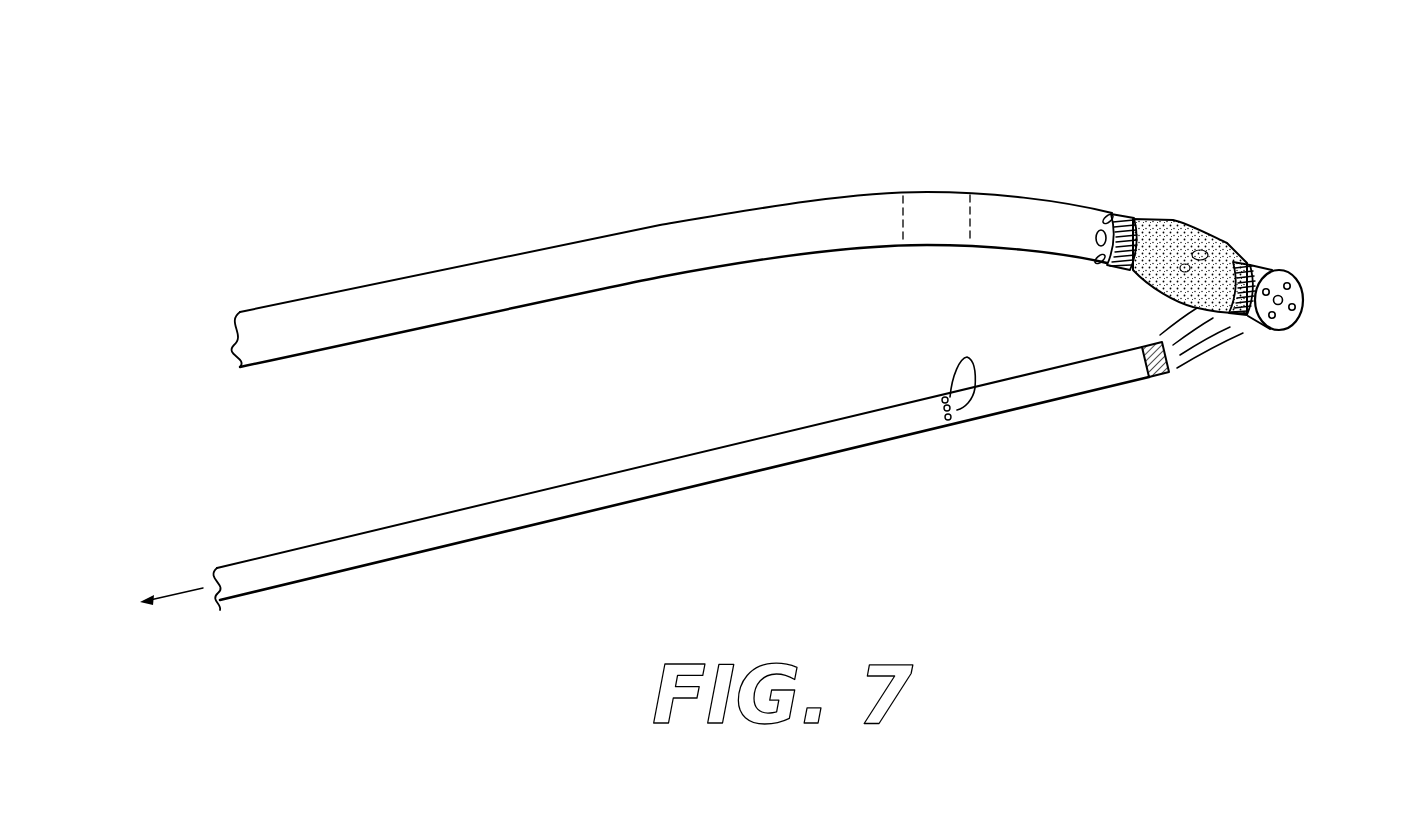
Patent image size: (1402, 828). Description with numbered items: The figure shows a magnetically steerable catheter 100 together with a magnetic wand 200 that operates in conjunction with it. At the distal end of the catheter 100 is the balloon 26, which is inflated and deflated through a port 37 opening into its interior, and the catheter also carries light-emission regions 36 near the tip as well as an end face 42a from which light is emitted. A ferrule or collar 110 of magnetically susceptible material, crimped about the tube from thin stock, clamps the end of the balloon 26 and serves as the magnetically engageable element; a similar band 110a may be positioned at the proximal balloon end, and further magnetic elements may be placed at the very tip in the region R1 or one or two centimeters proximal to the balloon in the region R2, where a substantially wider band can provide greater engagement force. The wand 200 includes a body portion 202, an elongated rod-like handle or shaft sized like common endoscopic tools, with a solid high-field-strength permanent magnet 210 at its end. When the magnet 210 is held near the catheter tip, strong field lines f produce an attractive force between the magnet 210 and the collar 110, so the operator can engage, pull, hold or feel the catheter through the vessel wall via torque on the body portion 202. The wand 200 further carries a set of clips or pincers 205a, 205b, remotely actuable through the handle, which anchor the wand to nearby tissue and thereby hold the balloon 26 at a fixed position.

The magnetically steerable catheter 100 is at (776, 168).
The region proximal to the balloon R2 is at (907, 178).
The emission regions 36 is at (1110, 215).
The band at the proximal balloon end 110a is at (1138, 217).
The balloon 26 is at (1216, 239).
The port 37 is at (1222, 237).
The ferrule or collar 110 is at (1242, 317).
The end face 42a is at (1303, 297).
The tip region R1 is at (1312, 285).
The field lines f is at (1163, 322).
The magnetic wand 200 is at (647, 506).
The body portion 202 is at (612, 505).
The magnet 210 is at (1162, 373).
The clip or pincer 205a is at (953, 365).
The clip or pincer 205b is at (973, 400).